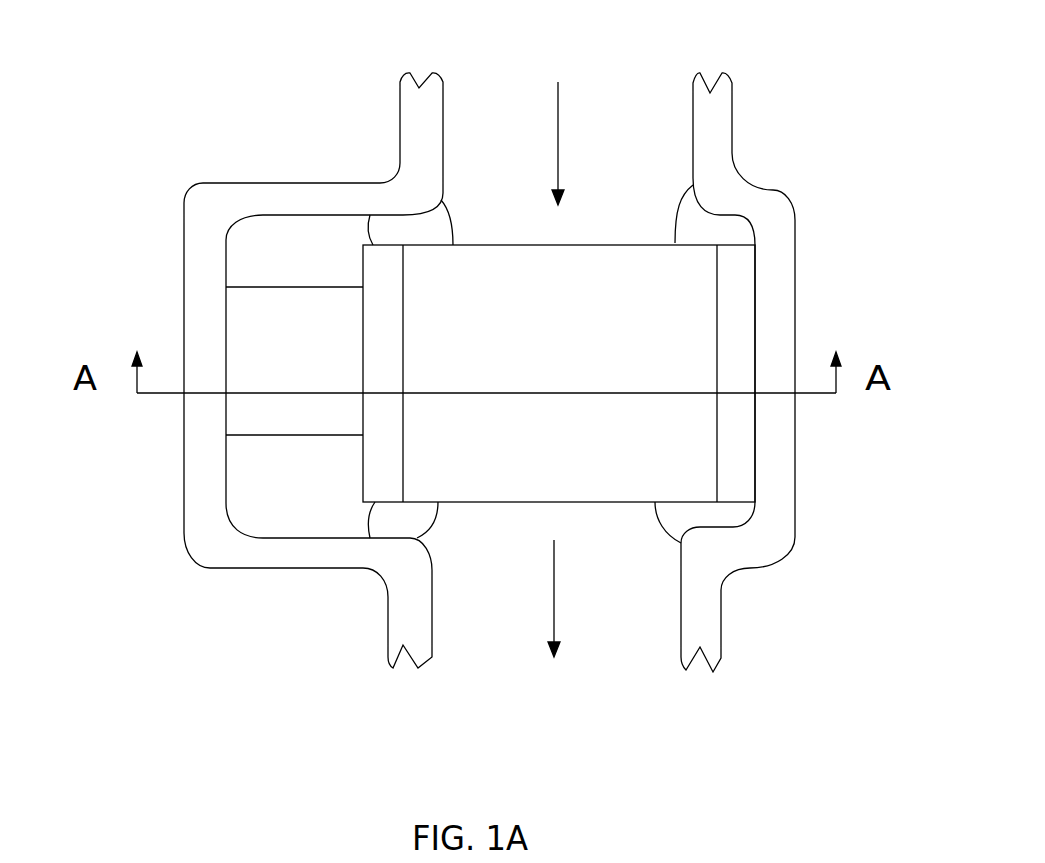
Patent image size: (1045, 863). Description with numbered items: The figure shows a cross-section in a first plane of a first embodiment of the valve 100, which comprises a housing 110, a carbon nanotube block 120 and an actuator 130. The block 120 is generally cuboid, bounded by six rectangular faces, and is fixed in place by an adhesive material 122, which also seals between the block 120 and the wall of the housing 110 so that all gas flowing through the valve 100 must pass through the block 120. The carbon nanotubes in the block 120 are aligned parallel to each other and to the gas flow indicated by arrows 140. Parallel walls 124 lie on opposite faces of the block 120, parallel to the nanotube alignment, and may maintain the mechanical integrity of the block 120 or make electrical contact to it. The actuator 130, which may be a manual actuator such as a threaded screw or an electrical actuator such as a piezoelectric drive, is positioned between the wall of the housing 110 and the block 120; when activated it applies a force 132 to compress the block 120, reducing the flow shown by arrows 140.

The valve 100 is at (128, 79).
The housing 110 is at (417, 110).
The carbon nanotube block 120 is at (678, 457).
The adhesive material 122 is at (717, 227).
The parallel walls 124 is at (738, 307).
The actuator 130 is at (263, 300).
The force 132 is at (322, 348).
The arrows indicating gas flow 140 is at (558, 115).